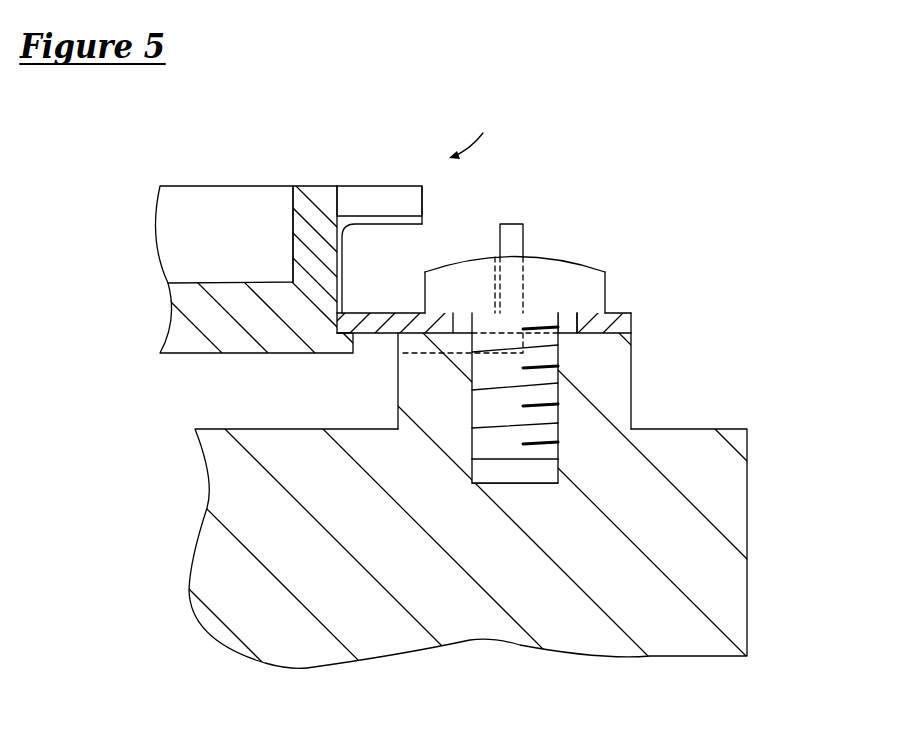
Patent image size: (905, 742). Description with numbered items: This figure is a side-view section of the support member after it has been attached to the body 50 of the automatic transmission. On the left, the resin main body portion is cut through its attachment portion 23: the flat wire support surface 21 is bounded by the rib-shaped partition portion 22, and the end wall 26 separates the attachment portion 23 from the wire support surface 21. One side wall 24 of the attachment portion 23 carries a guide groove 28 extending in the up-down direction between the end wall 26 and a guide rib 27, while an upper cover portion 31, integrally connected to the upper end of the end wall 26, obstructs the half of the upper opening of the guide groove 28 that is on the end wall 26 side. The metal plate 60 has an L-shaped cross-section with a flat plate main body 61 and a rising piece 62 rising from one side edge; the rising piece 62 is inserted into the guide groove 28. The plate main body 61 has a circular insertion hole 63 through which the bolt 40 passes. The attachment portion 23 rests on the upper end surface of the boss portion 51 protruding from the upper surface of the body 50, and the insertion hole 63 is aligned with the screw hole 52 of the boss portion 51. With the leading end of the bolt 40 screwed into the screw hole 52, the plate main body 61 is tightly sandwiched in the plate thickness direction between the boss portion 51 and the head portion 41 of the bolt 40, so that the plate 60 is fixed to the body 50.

The wire support surface 21 is at (193, 283).
The partition portion 22 is at (215, 195).
The attachment portion 23 is at (474, 132).
The side wall 24 is at (424, 198).
The end wall 26 is at (315, 197).
The guide rib 27 is at (510, 232).
The guide groove 28 is at (385, 220).
The upper cover portion 31 is at (363, 192).
The bolt 40 is at (570, 258).
The head portion 41 is at (552, 272).
The body 50 is at (747, 512).
The boss portion 51 is at (410, 382).
The screw hole 52 is at (447, 430).
The plate 60 is at (632, 320).
The plate main body 61 is at (613, 313).
The rising piece 62 is at (477, 247).
The insertion hole 63 is at (575, 323).